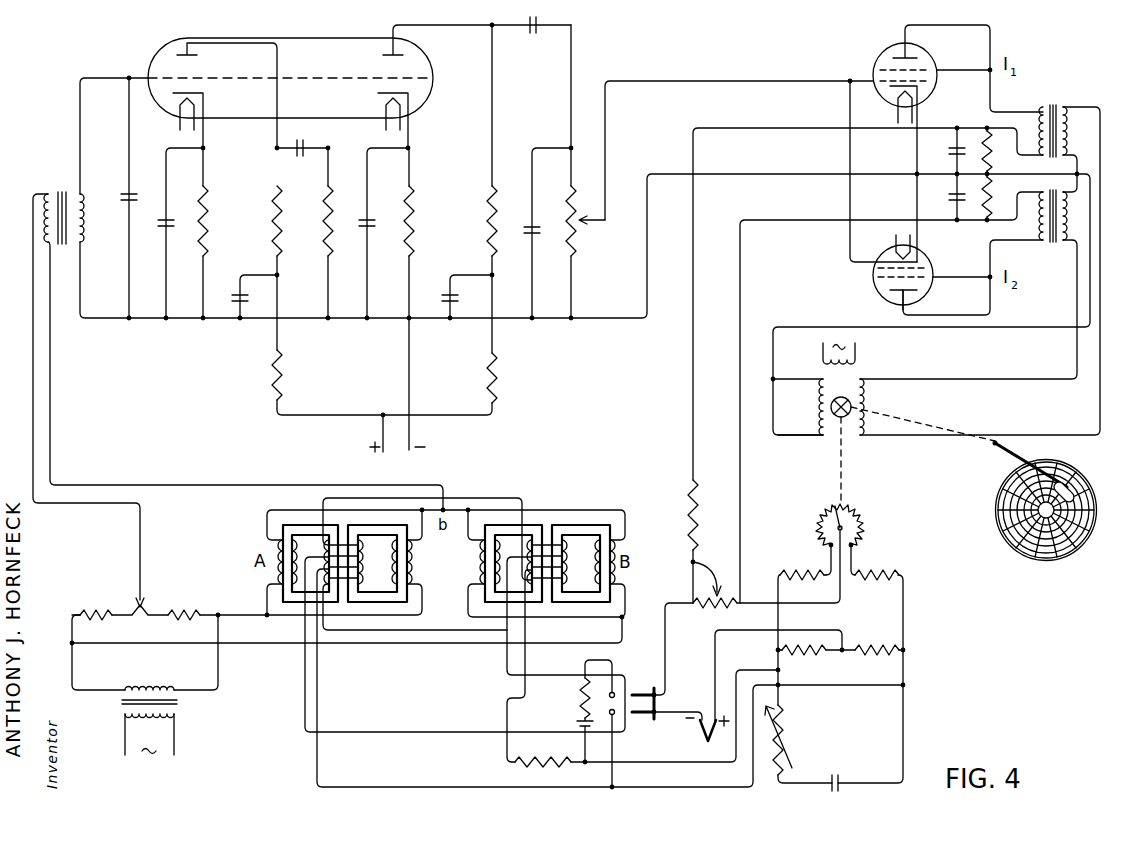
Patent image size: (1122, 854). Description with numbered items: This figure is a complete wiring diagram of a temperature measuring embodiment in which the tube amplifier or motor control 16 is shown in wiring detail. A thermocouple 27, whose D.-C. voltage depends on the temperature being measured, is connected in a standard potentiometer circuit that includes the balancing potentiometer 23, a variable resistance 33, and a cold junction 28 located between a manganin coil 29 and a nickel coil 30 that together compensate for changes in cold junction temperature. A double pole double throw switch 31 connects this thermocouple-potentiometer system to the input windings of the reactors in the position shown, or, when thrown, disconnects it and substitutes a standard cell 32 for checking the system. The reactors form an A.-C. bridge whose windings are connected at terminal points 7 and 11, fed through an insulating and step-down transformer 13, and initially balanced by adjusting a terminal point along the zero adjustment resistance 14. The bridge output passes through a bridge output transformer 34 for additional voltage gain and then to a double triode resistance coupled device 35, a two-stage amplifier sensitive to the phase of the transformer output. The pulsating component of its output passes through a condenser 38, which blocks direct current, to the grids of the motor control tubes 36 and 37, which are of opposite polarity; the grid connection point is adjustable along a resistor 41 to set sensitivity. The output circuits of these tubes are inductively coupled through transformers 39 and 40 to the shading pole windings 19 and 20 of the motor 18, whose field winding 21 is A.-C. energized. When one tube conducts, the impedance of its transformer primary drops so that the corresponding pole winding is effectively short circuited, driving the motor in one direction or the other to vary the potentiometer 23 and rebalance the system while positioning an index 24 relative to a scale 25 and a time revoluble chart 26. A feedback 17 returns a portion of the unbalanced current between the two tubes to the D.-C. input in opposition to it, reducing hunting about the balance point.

The terminal point 7 is at (266, 605).
The terminal point 11 is at (362, 626).
The insulating and step-down transformer 13 is at (167, 721).
The zero adjustment resistance 14 is at (145, 614).
The tube amplifier 16 is at (714, 72).
The feedback 17 is at (747, 613).
The motor 18 is at (833, 464).
The shading pole winding 19 is at (820, 393).
The shading pole winding 20 is at (866, 394).
The field winding 21 is at (855, 354).
The potentiometer 23 is at (854, 539).
The index 24 is at (998, 452).
The scale 25 is at (1065, 483).
The time revoluble chart 26 is at (1035, 556).
The thermocouple 27 is at (707, 742).
The cold junction 28 is at (843, 654).
The manganin coil 29 is at (818, 656).
The nickel coil 30 is at (862, 655).
The double pole double throw switch 31 is at (621, 723).
The standard cell 32 is at (571, 720).
The variable resistance 33 is at (792, 740).
The bridge output transformer 34 is at (72, 187).
The double triode resistance coupled device 35 is at (158, 56).
The motor control tube 36 is at (880, 52).
The motor control tube 37 is at (876, 294).
The condenser 38 is at (533, 36).
The transformer 39 is at (1053, 121).
The transformer 40 is at (1053, 228).
The resistor 41 is at (585, 221).